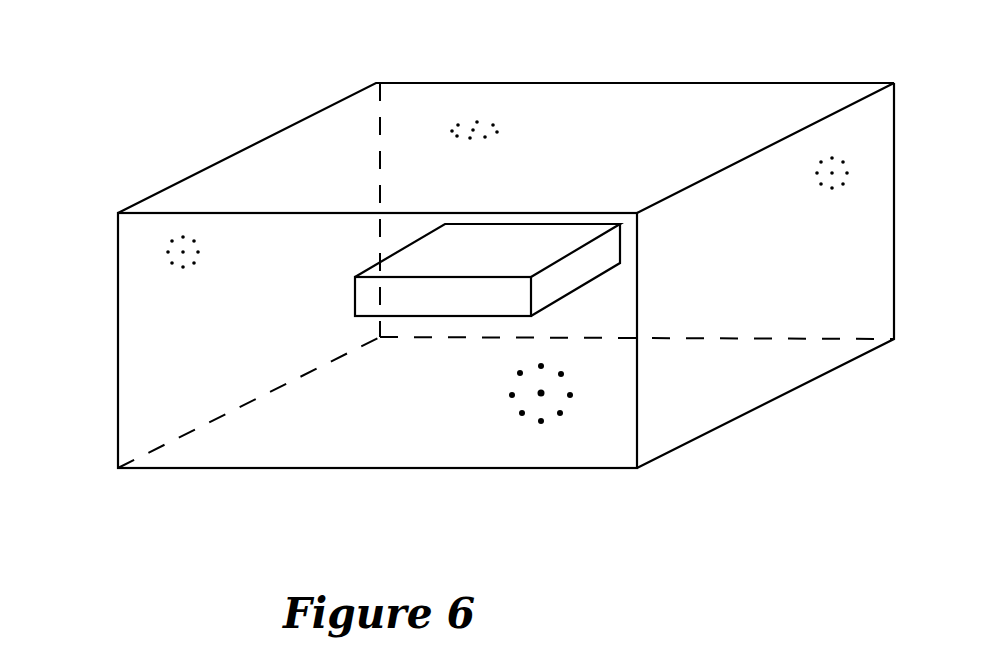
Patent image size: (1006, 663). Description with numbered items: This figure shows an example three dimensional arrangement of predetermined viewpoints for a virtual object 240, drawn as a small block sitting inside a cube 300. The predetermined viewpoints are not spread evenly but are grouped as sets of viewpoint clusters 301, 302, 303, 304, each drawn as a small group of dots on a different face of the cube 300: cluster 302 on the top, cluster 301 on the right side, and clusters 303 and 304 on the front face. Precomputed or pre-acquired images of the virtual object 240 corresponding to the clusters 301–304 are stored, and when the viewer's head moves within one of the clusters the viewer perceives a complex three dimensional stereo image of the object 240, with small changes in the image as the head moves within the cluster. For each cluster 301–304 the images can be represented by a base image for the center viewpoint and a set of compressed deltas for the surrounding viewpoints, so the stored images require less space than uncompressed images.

The cube 300 is at (812, 393).
The virtual object 240 is at (442, 262).
The viewpoint cluster 301 is at (867, 159).
The viewpoint cluster 302 is at (487, 107).
The viewpoint cluster 303 is at (150, 269).
The viewpoint cluster 304 is at (558, 442).